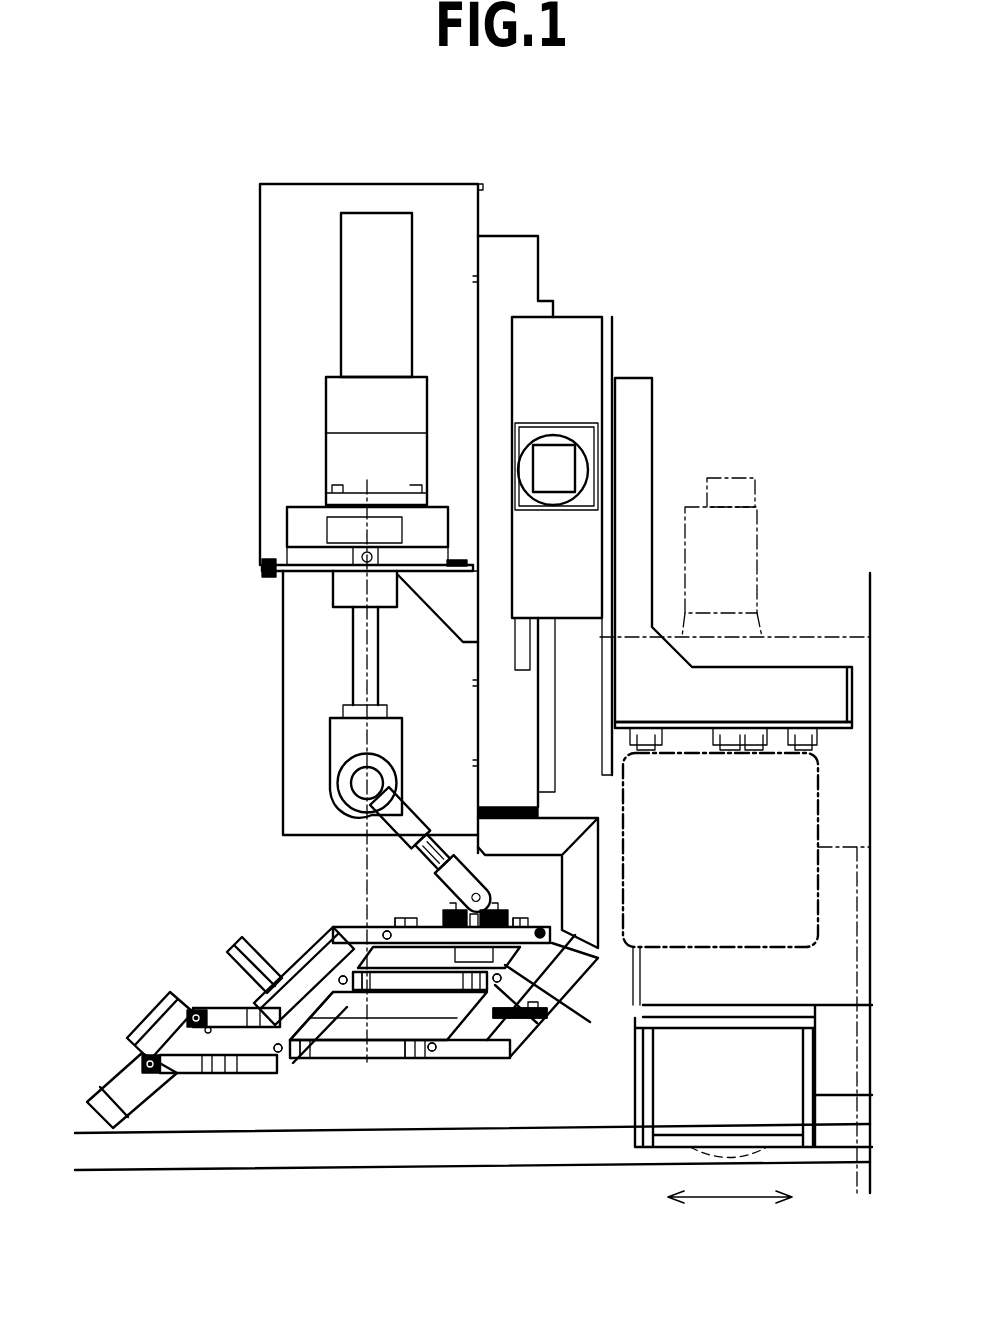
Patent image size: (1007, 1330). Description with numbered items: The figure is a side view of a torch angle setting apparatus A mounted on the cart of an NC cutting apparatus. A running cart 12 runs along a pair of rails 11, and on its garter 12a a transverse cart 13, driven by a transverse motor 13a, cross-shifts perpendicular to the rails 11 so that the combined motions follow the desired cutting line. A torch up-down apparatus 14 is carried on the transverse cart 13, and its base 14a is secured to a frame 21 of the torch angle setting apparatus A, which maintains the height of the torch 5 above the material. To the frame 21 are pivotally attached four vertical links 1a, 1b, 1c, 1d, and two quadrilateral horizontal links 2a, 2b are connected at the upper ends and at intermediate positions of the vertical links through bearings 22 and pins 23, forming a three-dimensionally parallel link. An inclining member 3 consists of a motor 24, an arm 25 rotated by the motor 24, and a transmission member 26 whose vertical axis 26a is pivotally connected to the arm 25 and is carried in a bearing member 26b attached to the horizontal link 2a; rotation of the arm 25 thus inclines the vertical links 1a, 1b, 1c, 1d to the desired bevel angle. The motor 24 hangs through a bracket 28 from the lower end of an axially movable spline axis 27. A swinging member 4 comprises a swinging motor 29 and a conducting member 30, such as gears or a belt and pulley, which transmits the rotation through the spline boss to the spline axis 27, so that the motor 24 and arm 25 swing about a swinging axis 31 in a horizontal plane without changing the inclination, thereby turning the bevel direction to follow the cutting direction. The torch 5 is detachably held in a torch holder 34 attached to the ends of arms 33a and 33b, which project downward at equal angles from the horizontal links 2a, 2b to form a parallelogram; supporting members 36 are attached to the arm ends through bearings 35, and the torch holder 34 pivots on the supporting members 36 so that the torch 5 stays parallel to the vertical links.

The vertical link 1a is at (340, 927).
The vertical link 1b is at (468, 1028).
The vertical link 1c is at (441, 935).
The vertical link 1d is at (388, 1016).
The horizontal link 2a is at (560, 965).
The horizontal link 2b is at (472, 1060).
The inclining member 3 is at (310, 776).
The swinging member 4 is at (270, 532).
The torch 5 is at (123, 1073).
The rail 11 is at (540, 1172).
The running cart 12 is at (837, 1077).
The garter 12a is at (778, 760).
The transverse cart 13 is at (640, 418).
The transverse motor 13a is at (757, 532).
The torch up-down apparatus 14 is at (578, 338).
The base 14a is at (600, 843).
The frame 21 is at (492, 1060).
The bearing 22 is at (408, 915).
The pin 23 is at (340, 975).
The motor 24 is at (398, 748).
The arm 25 is at (425, 845).
The transmission member 26 is at (446, 906).
The axis 26a is at (500, 908).
The bearing member 26b is at (470, 1030).
The spline axis 27 is at (355, 686).
The bracket 28 is at (340, 735).
The swinging motor 29 is at (355, 330).
The conducting member 30 is at (335, 530).
The swinging axis 31 is at (365, 858).
The arm 33a is at (290, 1005).
The arm 33b is at (366, 1060).
The torch holder 34 is at (147, 1020).
The bearing 35 is at (222, 1060).
The supporting member 36 is at (197, 1017).
The torch angle setting apparatus A is at (214, 840).